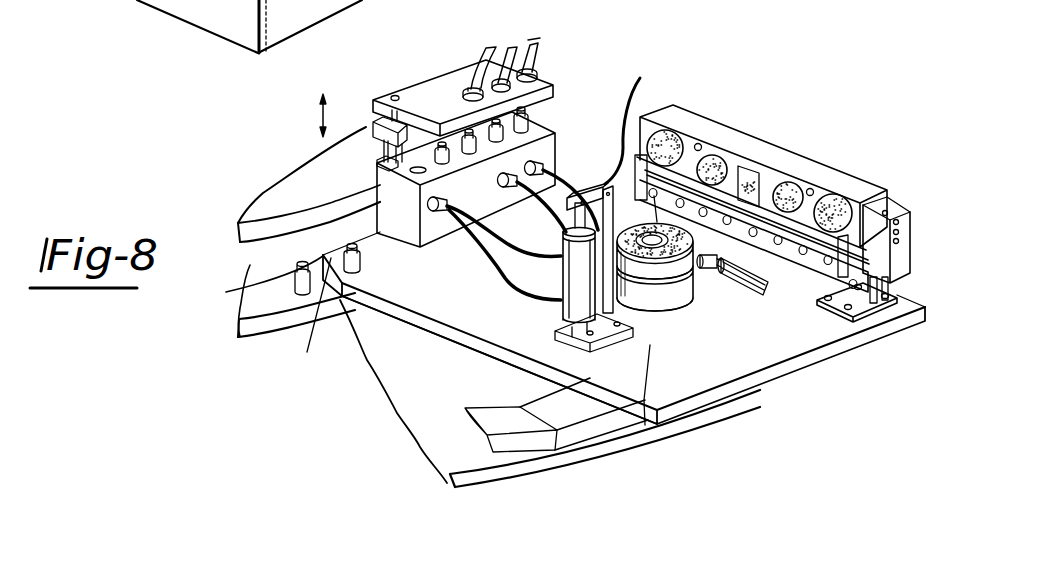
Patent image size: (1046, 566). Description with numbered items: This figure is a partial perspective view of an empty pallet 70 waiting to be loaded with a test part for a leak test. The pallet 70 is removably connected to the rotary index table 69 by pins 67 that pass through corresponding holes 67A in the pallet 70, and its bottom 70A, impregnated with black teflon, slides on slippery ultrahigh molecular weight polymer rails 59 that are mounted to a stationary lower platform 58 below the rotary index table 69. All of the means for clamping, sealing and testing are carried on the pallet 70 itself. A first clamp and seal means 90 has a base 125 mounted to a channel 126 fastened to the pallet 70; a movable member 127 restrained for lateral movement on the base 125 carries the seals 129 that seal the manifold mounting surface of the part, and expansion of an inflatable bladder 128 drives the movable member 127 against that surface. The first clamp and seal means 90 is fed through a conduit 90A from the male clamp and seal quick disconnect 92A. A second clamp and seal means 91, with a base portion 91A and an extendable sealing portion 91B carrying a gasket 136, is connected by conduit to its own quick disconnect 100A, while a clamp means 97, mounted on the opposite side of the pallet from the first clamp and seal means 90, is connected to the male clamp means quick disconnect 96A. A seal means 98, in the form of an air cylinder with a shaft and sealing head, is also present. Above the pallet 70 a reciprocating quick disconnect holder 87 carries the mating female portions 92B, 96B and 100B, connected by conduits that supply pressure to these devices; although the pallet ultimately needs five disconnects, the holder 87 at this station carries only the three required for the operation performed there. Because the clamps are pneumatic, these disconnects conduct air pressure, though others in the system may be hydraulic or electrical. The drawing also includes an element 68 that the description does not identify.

The stationary lower platform 58 is at (472, 458).
The polymer rails 59 is at (523, 420).
The pins 67 is at (335, 242).
The holes 67A is at (307, 352).
The curved shoe member 68 is at (273, 200).
The rotary index table 69 is at (257, 327).
The pallet 70 is at (743, 365).
The bottom of the pallet 70A is at (844, 347).
The quick disconnect holder 87 is at (338, 140).
The first clamp and seal means 90 is at (758, 150).
The conduit 90A is at (623, 123).
The second clamp and seal means 91 is at (682, 286).
The base portion 91A is at (652, 276).
The extendable sealing portion 91B is at (684, 302).
The clamp and seal quick disconnect 92A is at (533, 100).
The female portion of clamp and seal disconnect 92B is at (548, 83).
The clamp means quick disconnect 96A is at (538, 135).
The female portion of clamp means disconnect 96B is at (517, 50).
The clamp means 97 is at (562, 287).
The seal means 98 is at (757, 294).
The second clamp and seal means quick disconnect 100A is at (469, 156).
The female portion of second clamp and seal disconnect 100B is at (491, 50).
The base 125 is at (911, 243).
The channel 126 is at (886, 293).
The movable member 127 is at (853, 183).
The inflatable bladder 128 is at (897, 200).
The seals 129 is at (713, 152).
The gasket 136 is at (645, 425).